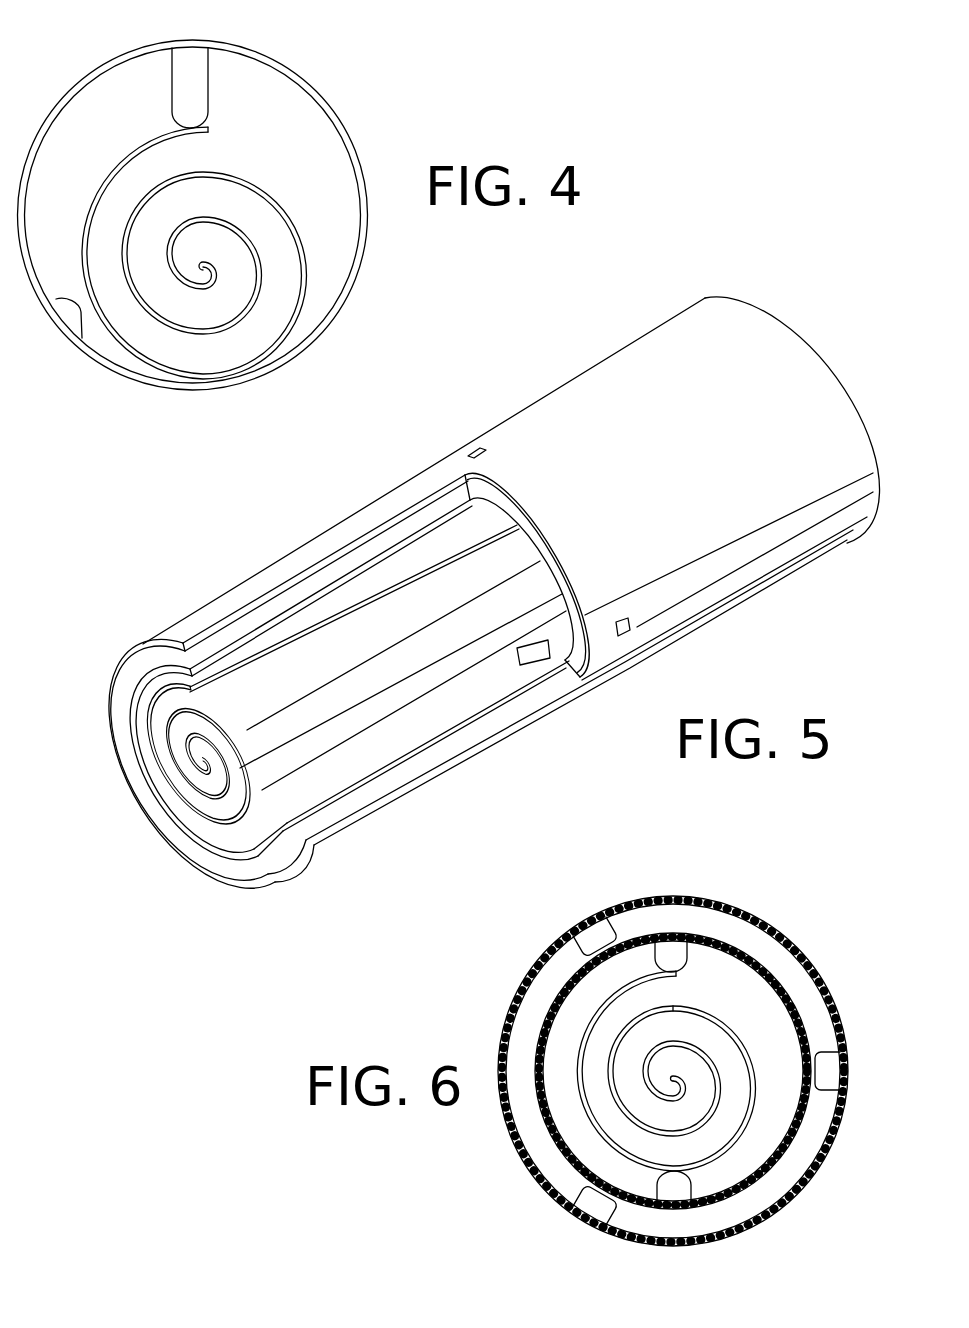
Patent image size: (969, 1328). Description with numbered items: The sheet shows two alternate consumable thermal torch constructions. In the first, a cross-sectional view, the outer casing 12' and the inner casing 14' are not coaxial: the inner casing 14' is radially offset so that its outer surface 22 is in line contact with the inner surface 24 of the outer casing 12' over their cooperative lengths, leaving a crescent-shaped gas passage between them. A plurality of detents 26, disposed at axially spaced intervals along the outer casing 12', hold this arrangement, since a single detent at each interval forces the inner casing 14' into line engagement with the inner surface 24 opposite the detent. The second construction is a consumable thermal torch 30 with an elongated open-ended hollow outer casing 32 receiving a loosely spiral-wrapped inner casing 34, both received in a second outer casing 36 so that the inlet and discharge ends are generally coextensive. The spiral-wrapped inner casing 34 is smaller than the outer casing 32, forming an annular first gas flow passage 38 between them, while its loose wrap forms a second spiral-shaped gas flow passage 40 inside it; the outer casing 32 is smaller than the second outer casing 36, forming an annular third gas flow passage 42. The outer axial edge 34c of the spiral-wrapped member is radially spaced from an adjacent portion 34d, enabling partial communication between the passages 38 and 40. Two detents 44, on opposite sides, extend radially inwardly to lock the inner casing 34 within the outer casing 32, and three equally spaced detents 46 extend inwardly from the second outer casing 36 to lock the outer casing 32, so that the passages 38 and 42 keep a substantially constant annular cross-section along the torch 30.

In FIG. 4, the outer casing 12' is at (221, 215).
In FIG. 4, the inner casing 14' is at (235, 215).
In FIG. 4, the outer surface 22 is at (265, 350).
In FIG. 4, the inner surface 24 is at (82, 338).
In FIG. 4, the detents 26 is at (190, 62).
In FIG. 5, the consumable thermal torch 30 is at (492, 777).
In FIG. 5, the outer casing 32 is at (205, 835).
In FIG. 6, the outer casing 32 is at (535, 1040).
In FIG. 5, the spiral-wrapped inner casing 34 is at (330, 740).
In FIG. 6, the spiral-wrapped inner casing 34 is at (747, 1128).
In FIG. 6, the outer axial edge 34c is at (677, 975).
In FIG. 6, the adjacent portion 34d is at (673, 1006).
In FIG. 5, the second outer casing 36 is at (625, 385).
In FIG. 6, the second outer casing 36 is at (528, 982).
In FIG. 5, the first gas flow passage 38 is at (257, 834).
In FIG. 6, the first gas flow passage 38 is at (558, 1108).
In FIG. 5, the second spiral-shaped gas flow passage 40 is at (158, 771).
In FIG. 6, the second spiral-shaped gas flow passage 40 is at (730, 1040).
In FIG. 5, the third gas flow passage 42 is at (146, 657).
In FIG. 6, the third gas flow passage 42 is at (677, 1227).
In FIG. 5, the detents 44 is at (478, 453).
In FIG. 6, the detents 44 is at (680, 950).
In FIG. 6, the detents 46 is at (585, 930).